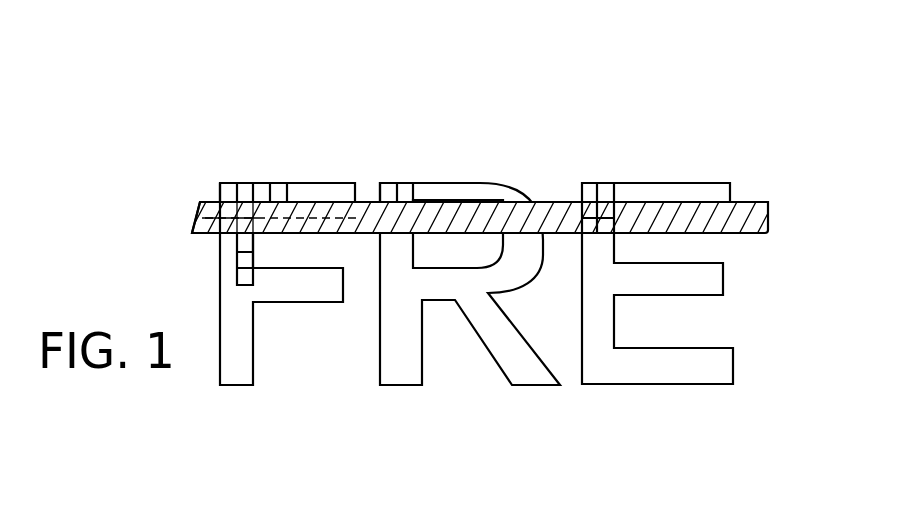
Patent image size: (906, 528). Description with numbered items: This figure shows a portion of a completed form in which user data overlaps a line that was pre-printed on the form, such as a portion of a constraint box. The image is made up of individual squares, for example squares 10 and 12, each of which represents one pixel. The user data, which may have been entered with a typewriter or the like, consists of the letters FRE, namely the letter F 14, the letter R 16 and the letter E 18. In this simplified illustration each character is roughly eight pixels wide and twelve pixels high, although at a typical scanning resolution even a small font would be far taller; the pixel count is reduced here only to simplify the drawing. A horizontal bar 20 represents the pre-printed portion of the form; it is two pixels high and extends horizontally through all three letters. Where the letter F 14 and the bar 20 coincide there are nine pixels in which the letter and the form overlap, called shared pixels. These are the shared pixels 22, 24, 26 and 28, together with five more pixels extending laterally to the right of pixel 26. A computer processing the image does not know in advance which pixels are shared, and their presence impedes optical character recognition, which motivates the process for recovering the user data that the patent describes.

The square 10 is at (390, 183).
The square 12 is at (405, 183).
The letter F 14 is at (280, 120).
The letter R 16 is at (455, 120).
The letter E 18 is at (655, 120).
The horizontal bar 20 is at (550, 202).
The shared pixel 22 is at (200, 213).
The shared pixel 24 is at (198, 223).
The shared pixel 26 is at (247, 223).
The shared pixel 28 is at (250, 220).